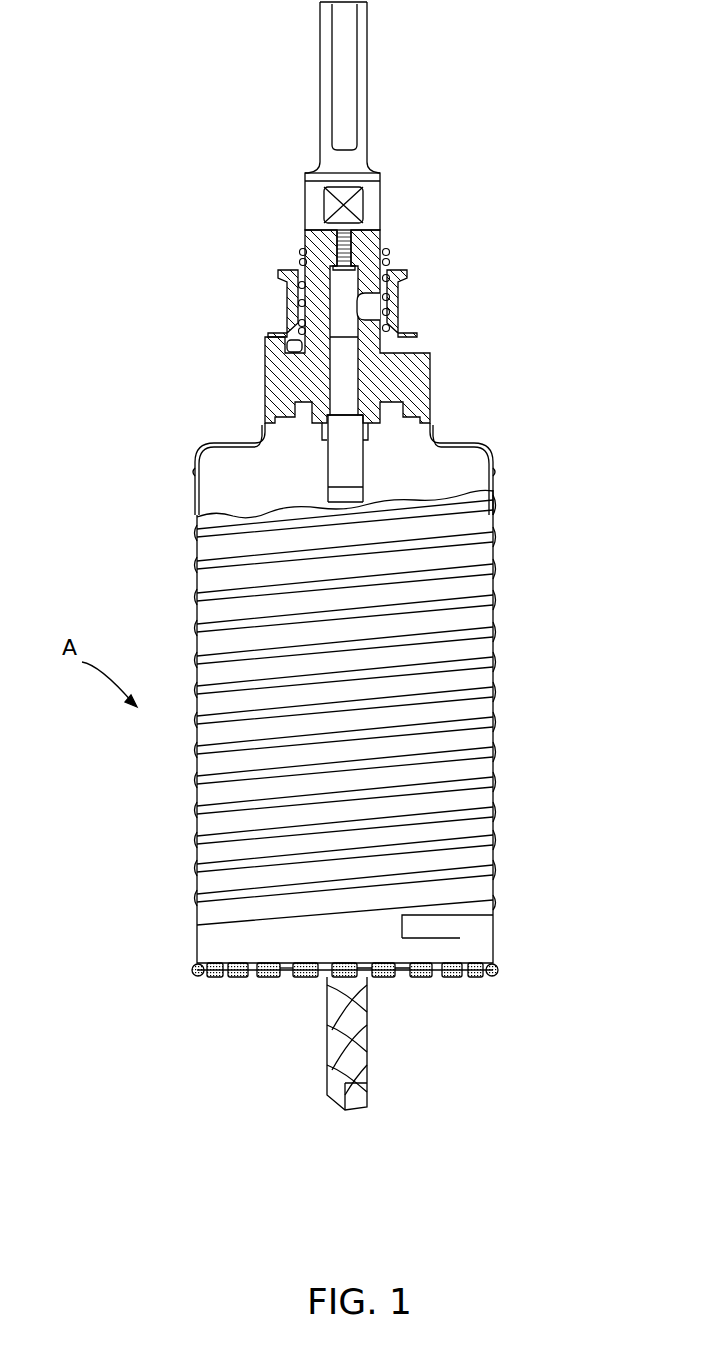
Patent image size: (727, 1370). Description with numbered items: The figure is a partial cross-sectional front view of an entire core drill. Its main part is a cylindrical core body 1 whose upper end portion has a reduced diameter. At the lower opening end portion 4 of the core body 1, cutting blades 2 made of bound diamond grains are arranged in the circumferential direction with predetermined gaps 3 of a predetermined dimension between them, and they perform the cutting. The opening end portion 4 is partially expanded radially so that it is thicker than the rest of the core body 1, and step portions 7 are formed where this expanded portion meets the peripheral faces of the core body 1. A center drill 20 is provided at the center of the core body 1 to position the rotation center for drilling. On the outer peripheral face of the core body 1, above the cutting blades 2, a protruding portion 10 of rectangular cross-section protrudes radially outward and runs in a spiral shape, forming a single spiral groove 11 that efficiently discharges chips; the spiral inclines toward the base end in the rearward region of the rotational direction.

The core body 1 is at (493, 555).
The cutting blades 2 is at (418, 977).
The gaps 3 is at (367, 977).
The opening end portion 4 is at (287, 977).
The step portions 7 is at (437, 965).
The protruding portion 10 is at (200, 837).
The spiral groove 11 is at (205, 820).
The center drill 20 is at (327, 1077).